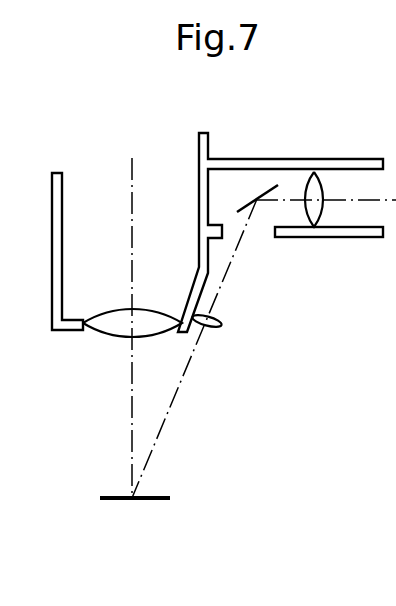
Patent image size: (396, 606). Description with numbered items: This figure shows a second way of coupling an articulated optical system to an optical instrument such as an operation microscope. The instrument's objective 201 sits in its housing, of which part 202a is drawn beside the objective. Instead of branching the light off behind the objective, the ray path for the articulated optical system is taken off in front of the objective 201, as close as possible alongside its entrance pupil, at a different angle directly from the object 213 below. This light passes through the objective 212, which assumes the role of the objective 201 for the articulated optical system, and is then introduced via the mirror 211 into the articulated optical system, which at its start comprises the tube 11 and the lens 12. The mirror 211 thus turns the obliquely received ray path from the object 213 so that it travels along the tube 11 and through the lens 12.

The tube 11 is at (338, 159).
The lens 12 is at (316, 221).
The objective 201 is at (104, 325).
The lens holder bracket 202a is at (57, 293).
The mirror 211 is at (267, 192).
The objective 212 is at (213, 326).
The object 213 is at (152, 500).